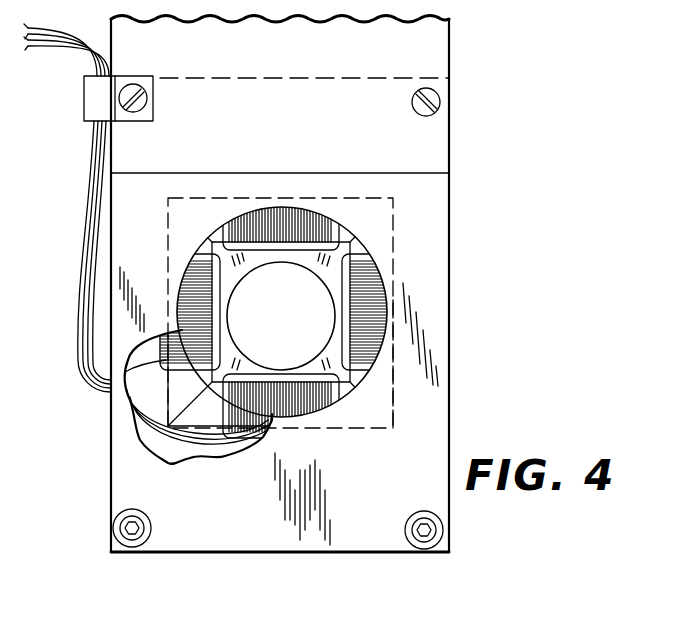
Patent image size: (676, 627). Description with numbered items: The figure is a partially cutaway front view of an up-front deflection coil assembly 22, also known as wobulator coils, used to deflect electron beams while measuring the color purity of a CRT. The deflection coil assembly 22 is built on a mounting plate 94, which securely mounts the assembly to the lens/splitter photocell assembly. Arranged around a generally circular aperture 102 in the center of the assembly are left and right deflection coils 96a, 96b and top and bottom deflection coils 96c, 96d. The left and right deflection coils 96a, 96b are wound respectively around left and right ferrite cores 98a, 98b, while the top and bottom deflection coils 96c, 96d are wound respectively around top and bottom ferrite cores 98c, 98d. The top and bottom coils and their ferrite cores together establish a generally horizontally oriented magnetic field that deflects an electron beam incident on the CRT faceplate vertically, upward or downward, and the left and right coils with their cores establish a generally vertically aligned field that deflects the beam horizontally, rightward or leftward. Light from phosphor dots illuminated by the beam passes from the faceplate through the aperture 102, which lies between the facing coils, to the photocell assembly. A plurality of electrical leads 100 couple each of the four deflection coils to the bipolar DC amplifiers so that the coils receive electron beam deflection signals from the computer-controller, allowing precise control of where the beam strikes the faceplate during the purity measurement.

The deflection coil assembly 22 is at (457, 329).
The mounting plate 94 is at (450, 450).
The left deflection coil 96a is at (190, 312).
The right deflection coil 96b is at (373, 312).
The top deflection coil 96c is at (281, 223).
The bottom deflection coil 96d is at (281, 406).
The left ferrite core 98a is at (198, 321).
The right ferrite core 98b is at (395, 394).
The top ferrite core 98c is at (329, 199).
The bottom ferrite core 98d is at (302, 313).
The electrical leads 100 is at (82, 260).
The aperture 102 is at (308, 333).